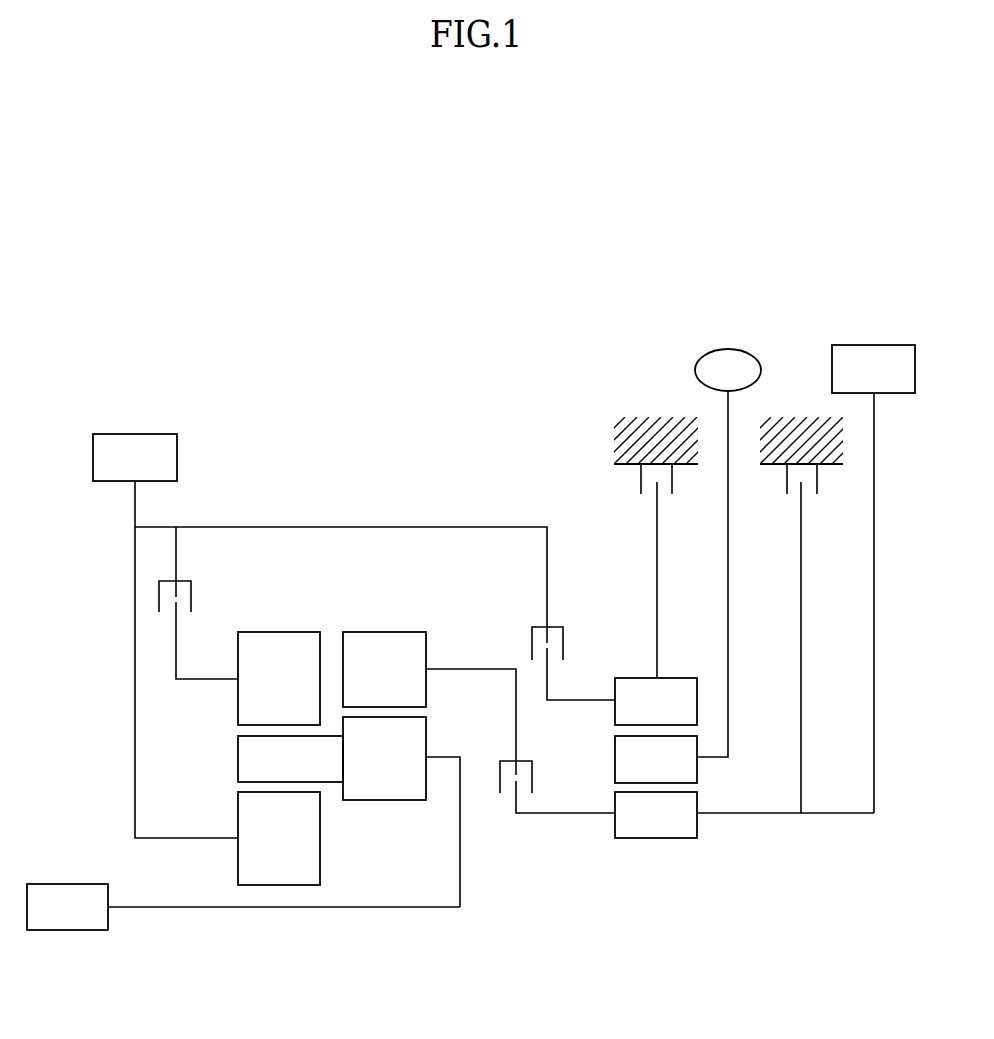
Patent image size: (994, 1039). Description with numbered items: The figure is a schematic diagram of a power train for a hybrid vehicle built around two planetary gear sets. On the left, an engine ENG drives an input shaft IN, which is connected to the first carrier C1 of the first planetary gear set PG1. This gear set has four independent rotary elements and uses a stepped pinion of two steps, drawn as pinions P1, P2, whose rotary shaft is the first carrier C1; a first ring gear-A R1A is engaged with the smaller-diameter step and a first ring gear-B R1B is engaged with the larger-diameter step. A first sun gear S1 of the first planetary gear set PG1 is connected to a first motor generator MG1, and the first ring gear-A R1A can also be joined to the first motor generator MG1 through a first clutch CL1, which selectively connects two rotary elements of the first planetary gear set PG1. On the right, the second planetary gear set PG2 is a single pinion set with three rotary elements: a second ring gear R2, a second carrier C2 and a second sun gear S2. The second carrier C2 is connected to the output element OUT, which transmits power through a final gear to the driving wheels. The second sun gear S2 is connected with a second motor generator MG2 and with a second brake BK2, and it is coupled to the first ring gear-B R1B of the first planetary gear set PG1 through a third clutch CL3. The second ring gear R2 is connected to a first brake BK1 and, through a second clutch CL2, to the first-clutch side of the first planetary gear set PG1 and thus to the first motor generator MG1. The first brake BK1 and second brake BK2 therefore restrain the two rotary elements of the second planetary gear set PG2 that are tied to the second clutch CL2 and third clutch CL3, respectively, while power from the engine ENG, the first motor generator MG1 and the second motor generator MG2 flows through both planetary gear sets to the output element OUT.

The engine ENG is at (67, 907).
The input shaft IN is at (183, 908).
The first motor generator MG1 is at (320, 636).
The second motor generator MG2 is at (873, 579).
The output element OUT is at (728, 370).
The first planetary gear set PG1 is at (375, 868).
The second planetary gear set PG2 is at (653, 842).
The first ring gear-A R1A is at (279, 678).
The first ring gear-B R1B is at (429, 703).
The first pinion gear P1 is at (290, 759).
The second pinion gear P2 is at (384, 758).
The first sun gear S1 is at (279, 838).
The first carrier C1 is at (443, 820).
The second ring gear R2 is at (656, 603).
The second carrier C2 is at (671, 587).
The second sun gear S2 is at (744, 815).
The first clutch CL1 is at (198, 603).
The second clutch CL2 is at (573, 663).
The third clutch CL3 is at (557, 787).
The first brake BK1 is at (655, 471).
The second brake BK2 is at (801, 615).